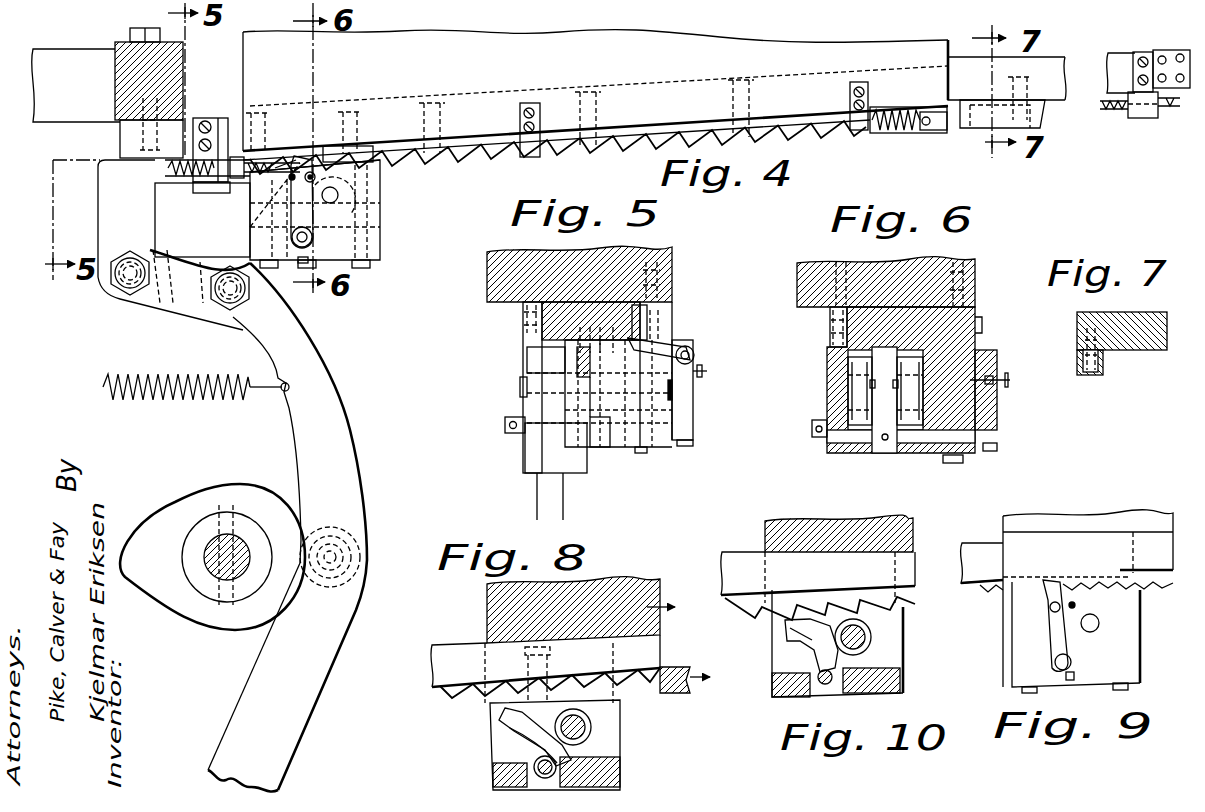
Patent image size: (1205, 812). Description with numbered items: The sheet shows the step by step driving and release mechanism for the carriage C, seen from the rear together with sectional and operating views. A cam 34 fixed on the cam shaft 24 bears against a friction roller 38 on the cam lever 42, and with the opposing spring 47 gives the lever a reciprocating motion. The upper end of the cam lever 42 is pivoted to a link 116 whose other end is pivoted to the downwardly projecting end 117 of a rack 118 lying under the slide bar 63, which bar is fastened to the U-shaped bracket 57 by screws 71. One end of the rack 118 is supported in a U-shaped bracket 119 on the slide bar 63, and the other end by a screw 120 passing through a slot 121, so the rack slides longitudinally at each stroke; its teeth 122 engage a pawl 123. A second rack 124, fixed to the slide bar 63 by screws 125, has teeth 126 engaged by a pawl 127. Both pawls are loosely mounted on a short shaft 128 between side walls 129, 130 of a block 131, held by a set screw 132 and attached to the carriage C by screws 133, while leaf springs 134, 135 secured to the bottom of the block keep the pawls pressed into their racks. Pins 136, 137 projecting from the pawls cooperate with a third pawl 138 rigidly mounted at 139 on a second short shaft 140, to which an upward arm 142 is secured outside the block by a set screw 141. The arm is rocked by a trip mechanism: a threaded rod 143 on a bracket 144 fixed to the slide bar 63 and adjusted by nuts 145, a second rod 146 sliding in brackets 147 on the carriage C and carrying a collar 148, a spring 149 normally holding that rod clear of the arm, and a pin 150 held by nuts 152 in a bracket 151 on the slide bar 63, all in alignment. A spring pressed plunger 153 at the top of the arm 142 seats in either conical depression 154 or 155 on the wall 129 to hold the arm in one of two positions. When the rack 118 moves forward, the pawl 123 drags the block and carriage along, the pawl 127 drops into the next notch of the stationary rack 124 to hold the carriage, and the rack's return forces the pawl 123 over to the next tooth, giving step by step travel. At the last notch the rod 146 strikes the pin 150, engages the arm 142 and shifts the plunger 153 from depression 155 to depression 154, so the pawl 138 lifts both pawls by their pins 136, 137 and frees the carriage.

In FIG. 4, the carriage C is at (641, 60).
In FIG. 5, the carriage C is at (655, 250).
In FIG. 6, the carriage C is at (974, 260).
In FIG. 8, the carriage C is at (496, 607).
In FIG. 10, the carriage C is at (768, 536).
In FIG. 9, the carriage C is at (1118, 510).
In FIG. 4, the cam shaft 24 is at (232, 532).
In FIG. 4, the cam 34 is at (200, 500).
In FIG. 4, the friction roller 38 is at (353, 531).
In FIG. 4, the cam lever 42 is at (343, 451).
In FIG. 4, the spring 47 is at (161, 400).
In FIG. 4, the U-shaped bracket 57 is at (73, 65).
In FIG. 4, the slide bar 63 is at (128, 137).
In FIG. 5, the slide bar 63 is at (543, 314).
In FIG. 6, the slide bar 63 is at (901, 380).
In FIG. 7, the slide bar 63 is at (1146, 323).
In FIG. 8, the slide bar 63 is at (463, 656).
In FIG. 10, the slide bar 63 is at (757, 568).
In FIG. 9, the slide bar 63 is at (985, 548).
In FIG. 4, the screws 71 is at (140, 38).
In FIG. 4, the link 116 is at (187, 293).
In FIG. 5, the link 116 is at (530, 468).
In FIG. 4, the downwardly projecting end 117 is at (143, 227).
In FIG. 5, the downwardly projecting end 117 is at (557, 403).
In FIG. 4, the rack 118 is at (221, 184).
In FIG. 6, the rack 118 is at (833, 344).
In FIG. 7, the rack 118 is at (1102, 377).
In FIG. 8, the rack 118 is at (674, 670).
In FIG. 4, the U-shaped bracket 119 is at (221, 193).
In FIG. 5, the U-shaped bracket 119 is at (574, 344).
In FIG. 4, the screw 120 is at (1010, 92).
In FIG. 7, the screw 120 is at (1115, 351).
In FIG. 4, the slot 121 is at (988, 124).
In FIG. 7, the slot 121 is at (1105, 369).
In FIG. 6, the teeth 122 is at (850, 358).
In FIG. 8, the teeth 122 is at (633, 694).
In FIG. 6, the pawl 123 is at (848, 374).
In FIG. 8, the pawl 123 is at (552, 700).
In FIG. 4, the second rack 124 is at (494, 140).
In FIG. 6, the second rack 124 is at (983, 329).
In FIG. 8, the second rack 124 is at (430, 694).
In FIG. 10, the second rack 124 is at (810, 600).
In FIG. 9, the second rack 124 is at (1003, 594).
In FIG. 4, the screws 125 is at (440, 103).
In FIG. 6, the screws 125 is at (907, 307).
In FIG. 8, the screws 125 is at (530, 663).
In FIG. 4, the teeth 126 is at (600, 152).
In FIG. 6, the teeth 126 is at (985, 344).
In FIG. 8, the teeth 126 is at (450, 706).
In FIG. 10, the teeth 126 is at (863, 600).
In FIG. 9, the teeth 126 is at (1147, 590).
In FIG. 5, the pawl 127 is at (607, 391).
In FIG. 6, the pawl 127 is at (997, 398).
In FIG. 8, the pawl 127 is at (588, 717).
In FIG. 10, the pawl 127 is at (843, 656).
In FIG. 4, the short shaft 128 is at (340, 195).
In FIG. 5, the short shaft 128 is at (523, 381).
In FIG. 6, the short shaft 128 is at (832, 391).
In FIG. 8, the short shaft 128 is at (590, 731).
In FIG. 10, the short shaft 128 is at (871, 638).
In FIG. 9, the short shaft 128 is at (1092, 626).
In FIG. 5, the side wall 129 is at (663, 410).
In FIG. 6, the side wall 129 is at (993, 444).
In FIG. 5, the side wall 130 is at (524, 354).
In FIG. 6, the side wall 130 is at (843, 346).
In FIG. 4, the block 131 is at (382, 241).
In FIG. 5, the block 131 is at (666, 454).
In FIG. 6, the block 131 is at (838, 455).
In FIG. 8, the block 131 is at (628, 765).
In FIG. 10, the block 131 is at (906, 684).
In FIG. 9, the block 131 is at (1076, 637).
In FIG. 4, the set screw 132 is at (368, 205).
In FIG. 4, the screws 133 is at (262, 126).
In FIG. 5, the screws 133 is at (489, 291).
In FIG. 6, the screws 133 is at (841, 266).
In FIG. 6, the leaf spring 134 is at (857, 401).
In FIG. 8, the leaf spring 134 is at (533, 757).
In FIG. 6, the leaf spring 135 is at (975, 458).
In FIG. 8, the leaf spring 135 is at (513, 738).
In FIG. 5, the pin 136 is at (573, 384).
In FIG. 6, the pin 136 is at (818, 429).
In FIG. 8, the pin 136 is at (503, 718).
In FIG. 10, the pin 136 is at (787, 651).
In FIG. 4, the pin 137 is at (254, 220).
In FIG. 5, the pin 137 is at (587, 381).
In FIG. 6, the pin 137 is at (918, 428).
In FIG. 8, the pin 137 is at (520, 731).
In FIG. 10, the pin 137 is at (797, 664).
In FIG. 4, the third pawl 138 is at (251, 233).
In FIG. 6, the third pawl 138 is at (827, 444).
In FIG. 8, the third pawl 138 is at (497, 786).
In FIG. 10, the third pawl 138 is at (800, 629).
In FIG. 6, the mounting point 139 is at (877, 414).
In FIG. 8, the mounting point 139 is at (540, 787).
In FIG. 10, the mounting point 139 is at (810, 693).
In FIG. 4, the short shaft 140 is at (313, 248).
In FIG. 5, the short shaft 140 is at (693, 431).
In FIG. 6, the short shaft 140 is at (987, 434).
In FIG. 8, the short shaft 140 is at (558, 773).
In FIG. 10, the short shaft 140 is at (818, 694).
In FIG. 9, the short shaft 140 is at (1073, 666).
In FIG. 4, the set screw 141 is at (306, 258).
In FIG. 5, the set screw 141 is at (683, 448).
In FIG. 6, the set screw 141 is at (993, 454).
In FIG. 9, the set screw 141 is at (1073, 681).
In FIG. 4, the arm 142 is at (317, 224).
In FIG. 5, the arm 142 is at (688, 387).
In FIG. 6, the arm 142 is at (1000, 419).
In FIG. 9, the arm 142 is at (1058, 638).
In FIG. 4, the threaded rod 143 is at (278, 162).
In FIG. 5, the threaded rod 143 is at (679, 337).
In FIG. 4, the bracket 144 is at (236, 101).
In FIG. 5, the bracket 144 is at (648, 331).
In FIG. 4, the nuts 145 is at (235, 148).
In FIG. 5, the nuts 145 is at (691, 351).
In FIG. 4, the second rod 146 is at (647, 138).
In FIG. 6, the second rod 146 is at (1002, 361).
In FIG. 4, the brackets 147 is at (520, 118).
In FIG. 6, the brackets 147 is at (1000, 348).
In FIG. 4, the collar 148 is at (927, 110).
In FIG. 4, the spring 149 is at (900, 132).
In FIG. 4, the pin 150 is at (1100, 106).
In FIG. 4, the bracket 151 is at (1146, 42).
In FIG. 4, the nuts 152 is at (1154, 121).
In FIG. 4, the spring pressed plunger 153 is at (296, 173).
In FIG. 5, the spring pressed plunger 153 is at (700, 366).
In FIG. 6, the spring pressed plunger 153 is at (1012, 380).
In FIG. 9, the spring pressed plunger 153 is at (1057, 581).
In FIG. 4, the conical depression 154 is at (312, 171).
In FIG. 9, the conical depression 154 is at (1040, 608).
In FIG. 4, the conical depression 155 is at (368, 146).
In FIG. 9, the conical depression 155 is at (1140, 610).